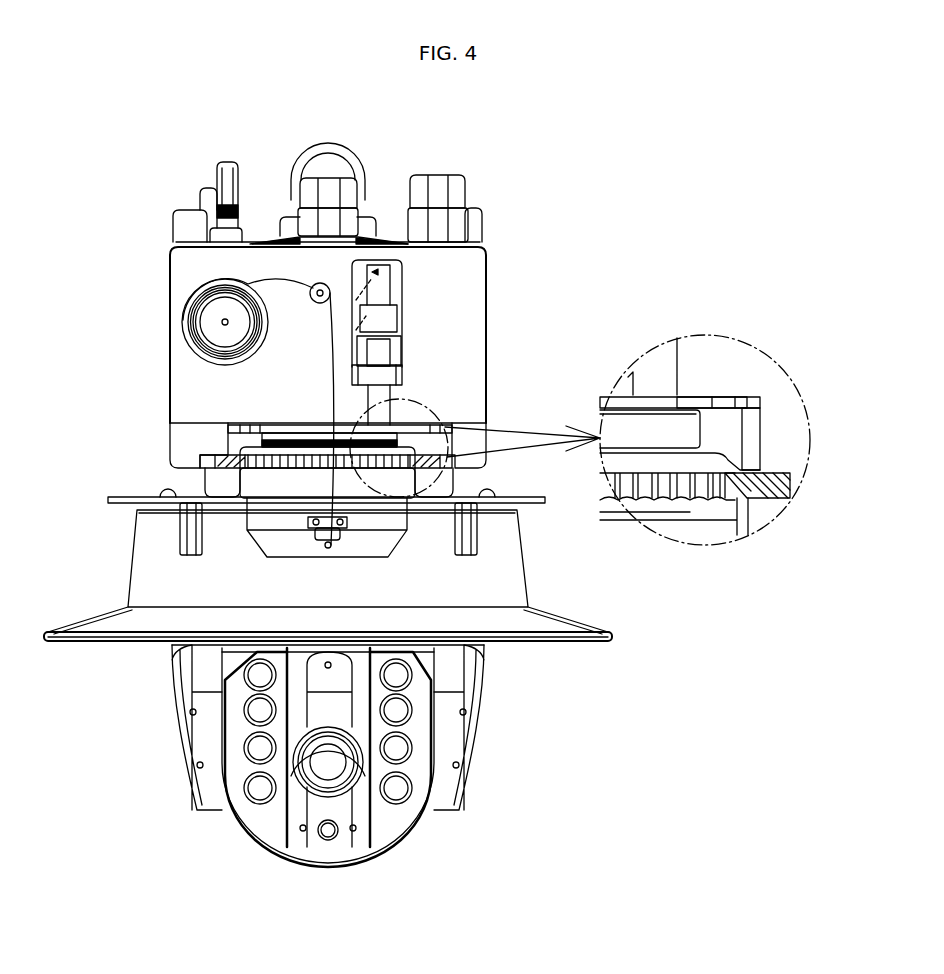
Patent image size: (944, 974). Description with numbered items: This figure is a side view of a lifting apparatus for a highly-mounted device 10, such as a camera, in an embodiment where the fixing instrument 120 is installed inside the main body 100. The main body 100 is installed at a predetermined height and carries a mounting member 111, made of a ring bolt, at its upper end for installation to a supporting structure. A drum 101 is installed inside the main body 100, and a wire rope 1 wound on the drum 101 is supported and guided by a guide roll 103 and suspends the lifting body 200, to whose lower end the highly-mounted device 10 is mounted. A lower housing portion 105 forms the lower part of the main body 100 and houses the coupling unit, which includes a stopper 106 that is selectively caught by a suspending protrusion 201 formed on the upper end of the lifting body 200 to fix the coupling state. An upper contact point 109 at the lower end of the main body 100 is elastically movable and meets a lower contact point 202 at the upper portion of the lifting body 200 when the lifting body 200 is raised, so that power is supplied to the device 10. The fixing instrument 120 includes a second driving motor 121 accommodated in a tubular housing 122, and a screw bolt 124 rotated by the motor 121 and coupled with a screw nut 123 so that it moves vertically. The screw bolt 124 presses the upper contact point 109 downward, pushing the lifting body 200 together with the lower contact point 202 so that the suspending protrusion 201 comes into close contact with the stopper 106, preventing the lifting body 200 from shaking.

The wire rope 1 is at (330, 353).
The highly-mounted device 10 is at (612, 666).
The main body 100 is at (370, 260).
The drum 101 is at (183, 318).
The guide roll 103 is at (322, 283).
The lower housing 105 is at (181, 437).
The stopper 106 is at (777, 488).
The upper contact point 109 is at (270, 433).
The mounting member 111 is at (327, 143).
The fixing instrument 120 is at (422, 332).
The second driving motor 121 is at (377, 285).
The tubular housing 122 is at (398, 306).
The screw nut 123 is at (380, 373).
The screw bolt 124 is at (380, 407).
The lifting body 200 is at (190, 502).
The suspending protrusion 201 is at (713, 497).
The lower contact point 202 is at (260, 488).